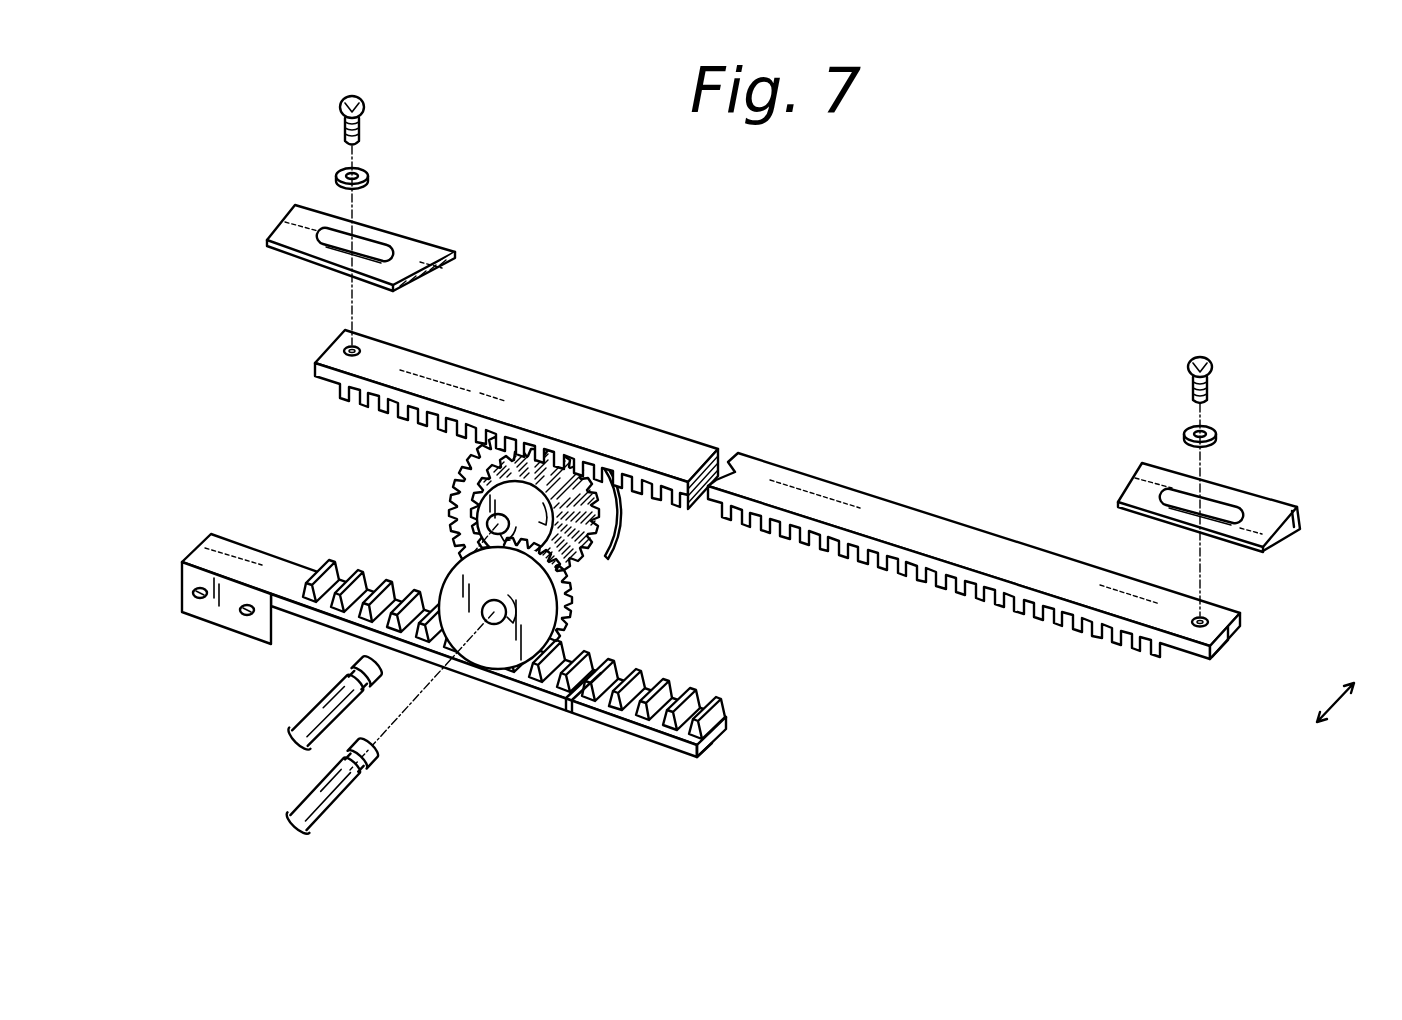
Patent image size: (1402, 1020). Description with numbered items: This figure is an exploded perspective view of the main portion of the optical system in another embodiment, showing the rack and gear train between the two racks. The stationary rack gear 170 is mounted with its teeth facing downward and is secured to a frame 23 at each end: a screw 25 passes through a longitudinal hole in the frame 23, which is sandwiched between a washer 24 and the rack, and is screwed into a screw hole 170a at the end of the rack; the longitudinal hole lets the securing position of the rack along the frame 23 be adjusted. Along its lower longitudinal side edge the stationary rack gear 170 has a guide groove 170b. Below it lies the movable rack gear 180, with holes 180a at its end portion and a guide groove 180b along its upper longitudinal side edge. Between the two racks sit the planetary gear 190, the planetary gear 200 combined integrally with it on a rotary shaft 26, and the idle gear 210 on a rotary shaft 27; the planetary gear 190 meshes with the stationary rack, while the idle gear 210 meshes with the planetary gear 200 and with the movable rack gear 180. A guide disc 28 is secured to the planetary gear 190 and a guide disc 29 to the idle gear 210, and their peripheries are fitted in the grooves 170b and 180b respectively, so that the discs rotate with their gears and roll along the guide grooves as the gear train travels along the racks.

The stationary rack gear 170 is at (818, 478).
The screw hole 170a is at (348, 350).
The guide groove 170b is at (1230, 635).
The movable rack gear 180 is at (733, 727).
The mounting hole 180a is at (246, 614).
The guide groove 180b is at (710, 746).
The planetary gear 190 is at (458, 446).
The planetary gear 200 is at (453, 520).
The idle gear 210 is at (556, 590).
The frame 23 is at (292, 214).
The washer 24 is at (370, 177).
The screw 25 is at (364, 102).
The rotary shaft 26 is at (290, 722).
The rotary shaft 27 is at (348, 810).
The guide disc 28 is at (617, 516).
The guide disc 29 is at (500, 662).